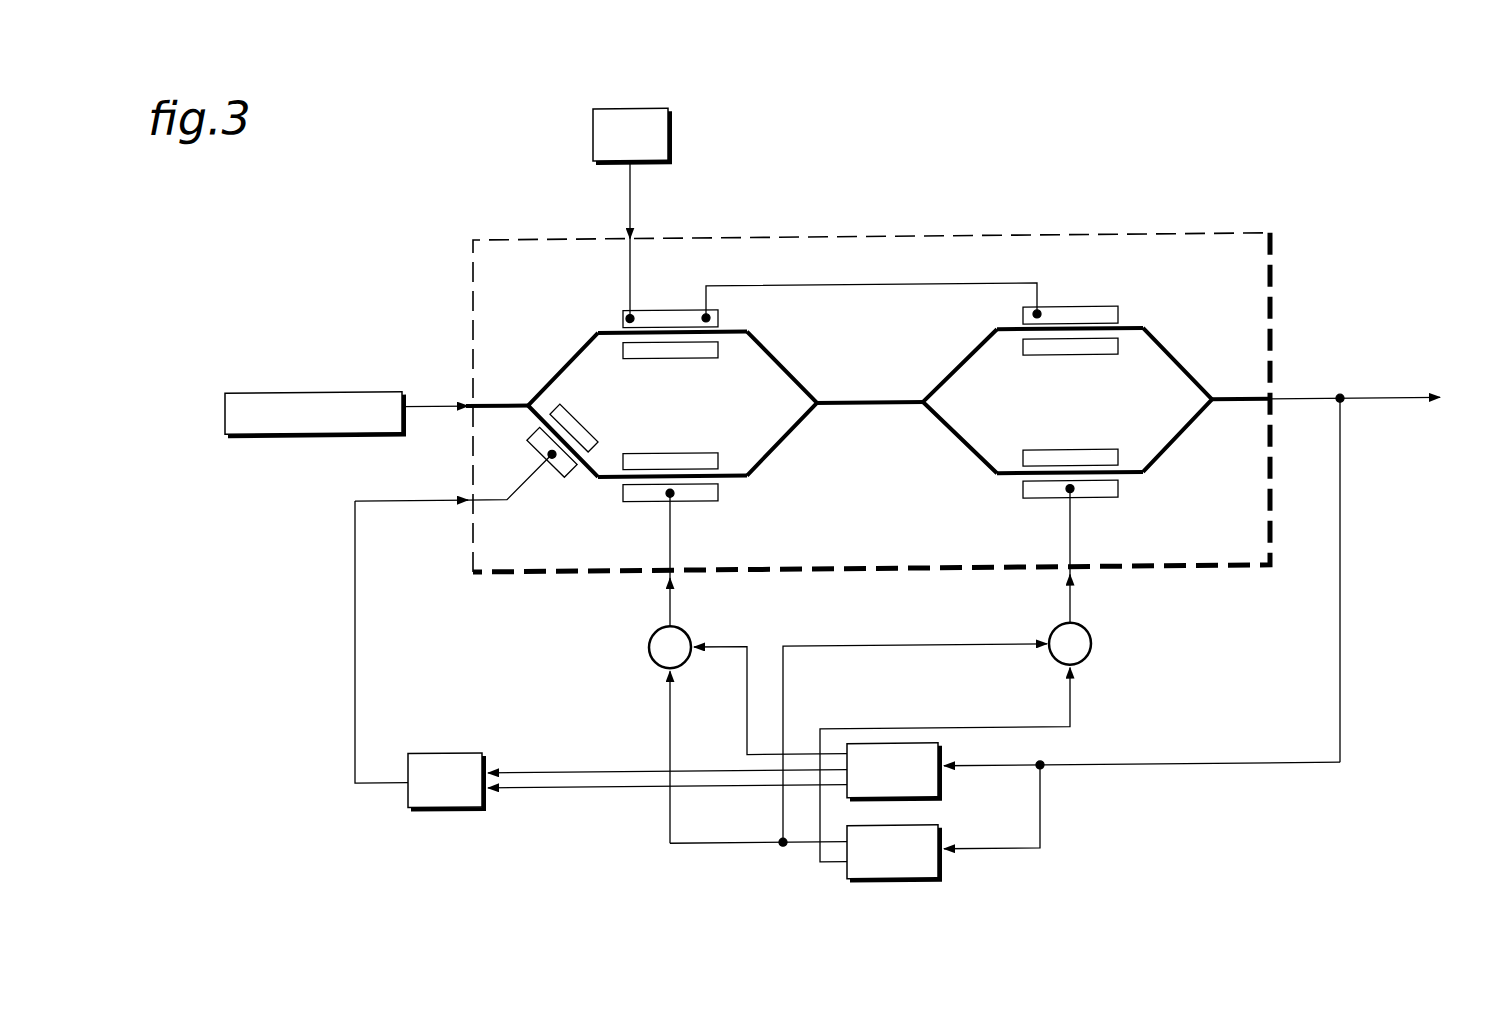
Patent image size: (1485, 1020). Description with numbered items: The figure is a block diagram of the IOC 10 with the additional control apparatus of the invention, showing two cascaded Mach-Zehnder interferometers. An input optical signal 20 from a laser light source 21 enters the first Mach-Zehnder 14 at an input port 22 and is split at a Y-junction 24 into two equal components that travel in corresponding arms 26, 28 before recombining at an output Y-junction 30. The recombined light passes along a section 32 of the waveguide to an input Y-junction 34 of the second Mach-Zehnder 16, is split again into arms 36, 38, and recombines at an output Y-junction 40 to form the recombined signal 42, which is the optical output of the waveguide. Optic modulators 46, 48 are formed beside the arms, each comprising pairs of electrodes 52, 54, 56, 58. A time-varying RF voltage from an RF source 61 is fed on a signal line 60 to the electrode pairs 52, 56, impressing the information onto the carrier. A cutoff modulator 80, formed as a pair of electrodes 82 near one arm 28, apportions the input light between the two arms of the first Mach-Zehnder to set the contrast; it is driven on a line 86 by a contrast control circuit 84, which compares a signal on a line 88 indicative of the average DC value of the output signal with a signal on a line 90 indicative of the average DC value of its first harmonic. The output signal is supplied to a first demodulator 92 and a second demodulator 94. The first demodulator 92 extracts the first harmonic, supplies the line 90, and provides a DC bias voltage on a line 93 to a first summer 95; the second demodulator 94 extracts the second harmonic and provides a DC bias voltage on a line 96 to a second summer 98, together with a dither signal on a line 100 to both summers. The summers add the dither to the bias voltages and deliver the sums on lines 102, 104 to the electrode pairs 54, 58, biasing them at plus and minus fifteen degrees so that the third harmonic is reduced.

The IOC 10 is at (996, 236).
The first Mach-Zehnder 14 is at (685, 395).
The second Mach-Zehnder 16 is at (1073, 392).
The input optical signal 20 is at (413, 406).
The laser light source 21 is at (290, 390).
The input port 22 is at (468, 410).
The Y-junction 24 is at (522, 402).
The arm 26 is at (565, 376).
The arm 28 is at (598, 452).
The output Y-junction 30 is at (818, 400).
The section of the waveguide 32 is at (858, 410).
The input Y-junction 34 is at (910, 392).
The arm 36 is at (973, 362).
The arm 38 is at (998, 462).
The output Y-junction 40 is at (1215, 412).
The recombined signal 42 is at (1290, 405).
The optic modulator 46 is at (692, 375).
The optic modulator 48 is at (1097, 372).
The pair of electrodes 52 is at (656, 352).
The pair of electrodes 54 is at (694, 482).
The pair of electrodes 56 is at (1100, 352).
The pair of electrodes 58 is at (1096, 482).
The signal line 60 is at (632, 182).
The RF source 61 is at (638, 110).
The cutoff modulator 80 is at (578, 482).
The pair of electrodes 82 is at (545, 445).
The contrast control circuit 84 is at (418, 752).
The line 86 is at (352, 656).
The line 88 is at (528, 790).
The line 90 is at (524, 772).
The first demodulator 92 is at (932, 804).
The line 93 is at (730, 645).
The second demodulator 94 is at (922, 884).
The first summer 95 is at (645, 650).
The line 96 is at (952, 732).
The second summer 98 is at (1086, 634).
The line 100 is at (858, 648).
The line 102 is at (664, 540).
The line 104 is at (1066, 518).